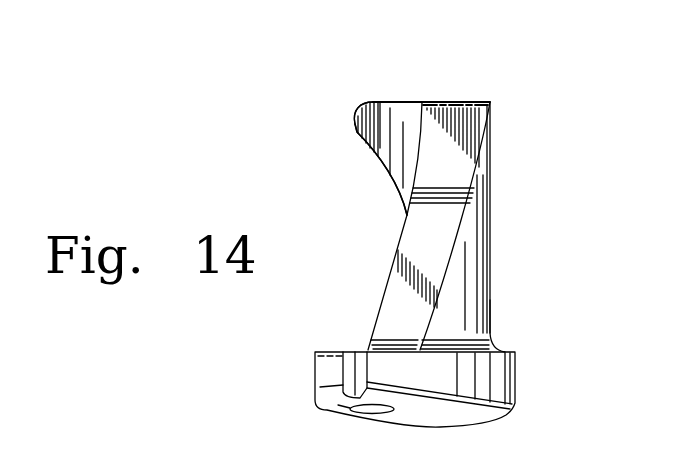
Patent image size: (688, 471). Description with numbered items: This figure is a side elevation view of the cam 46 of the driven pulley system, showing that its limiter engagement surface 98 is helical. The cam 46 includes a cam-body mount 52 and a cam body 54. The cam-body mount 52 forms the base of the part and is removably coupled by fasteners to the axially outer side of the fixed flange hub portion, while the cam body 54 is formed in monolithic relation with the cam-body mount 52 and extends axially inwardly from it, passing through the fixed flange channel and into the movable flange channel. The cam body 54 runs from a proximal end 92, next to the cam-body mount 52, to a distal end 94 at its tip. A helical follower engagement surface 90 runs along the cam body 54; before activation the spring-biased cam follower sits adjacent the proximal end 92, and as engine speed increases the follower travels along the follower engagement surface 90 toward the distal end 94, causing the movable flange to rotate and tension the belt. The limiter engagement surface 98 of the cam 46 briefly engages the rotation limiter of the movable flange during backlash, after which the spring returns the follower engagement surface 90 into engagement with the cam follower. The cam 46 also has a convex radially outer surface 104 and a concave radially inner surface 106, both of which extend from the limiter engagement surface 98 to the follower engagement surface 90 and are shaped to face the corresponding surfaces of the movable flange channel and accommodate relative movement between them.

The cam 46 is at (316, 136).
The distal end 94 is at (402, 102).
The concave radially inner surface 106 is at (377, 155).
The follower engagement surface 90 is at (396, 186).
The limiter engagement surface 98 is at (452, 223).
The convex radially outer surface 104 is at (472, 252).
The cam body 54 is at (472, 287).
The proximal end 92 is at (483, 333).
The cam-body mount 52 is at (503, 392).